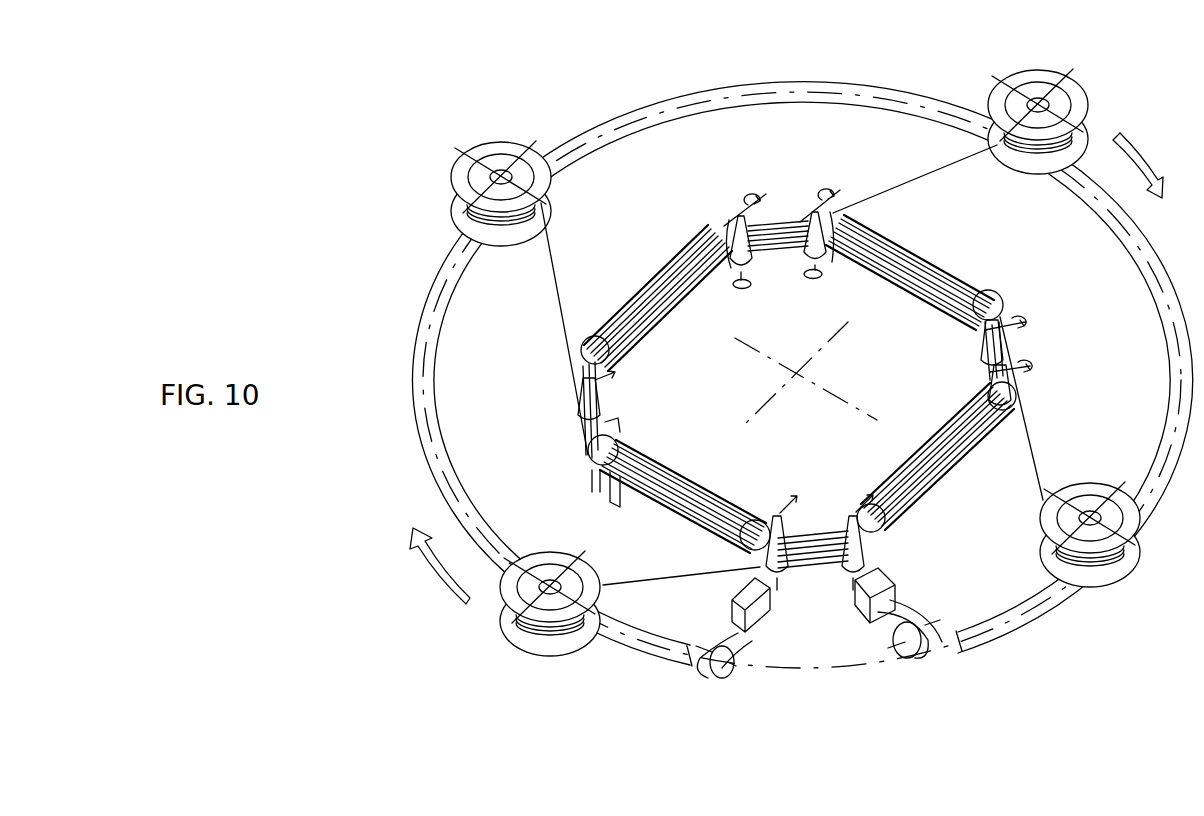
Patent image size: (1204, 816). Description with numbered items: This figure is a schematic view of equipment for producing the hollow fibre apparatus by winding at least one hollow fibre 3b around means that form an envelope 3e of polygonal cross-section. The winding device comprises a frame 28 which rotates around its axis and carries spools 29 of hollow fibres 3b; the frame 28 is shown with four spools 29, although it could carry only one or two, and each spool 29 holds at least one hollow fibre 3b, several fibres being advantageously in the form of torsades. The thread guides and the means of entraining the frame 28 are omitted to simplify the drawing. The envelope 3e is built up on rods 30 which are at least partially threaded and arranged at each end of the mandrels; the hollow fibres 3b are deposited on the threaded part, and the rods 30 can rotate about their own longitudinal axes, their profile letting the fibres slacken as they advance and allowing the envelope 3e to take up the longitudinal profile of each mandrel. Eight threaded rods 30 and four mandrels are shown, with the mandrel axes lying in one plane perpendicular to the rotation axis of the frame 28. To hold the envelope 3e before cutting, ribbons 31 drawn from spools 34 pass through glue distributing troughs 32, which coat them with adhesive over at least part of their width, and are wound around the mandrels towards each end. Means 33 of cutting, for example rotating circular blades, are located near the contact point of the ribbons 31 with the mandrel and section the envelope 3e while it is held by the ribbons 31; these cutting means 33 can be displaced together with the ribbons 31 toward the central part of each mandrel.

The frame 28 is at (693, 118).
The spool 29 is at (504, 146).
The threaded rod 30 is at (803, 287).
The ribbon 31 is at (888, 600).
The glue distributing trough 32 is at (735, 603).
The means of cutting 33 is at (846, 503).
The spool of ribbons 34 is at (907, 657).
The hollow fibre 3b is at (557, 330).
The envelope 3e is at (813, 563).